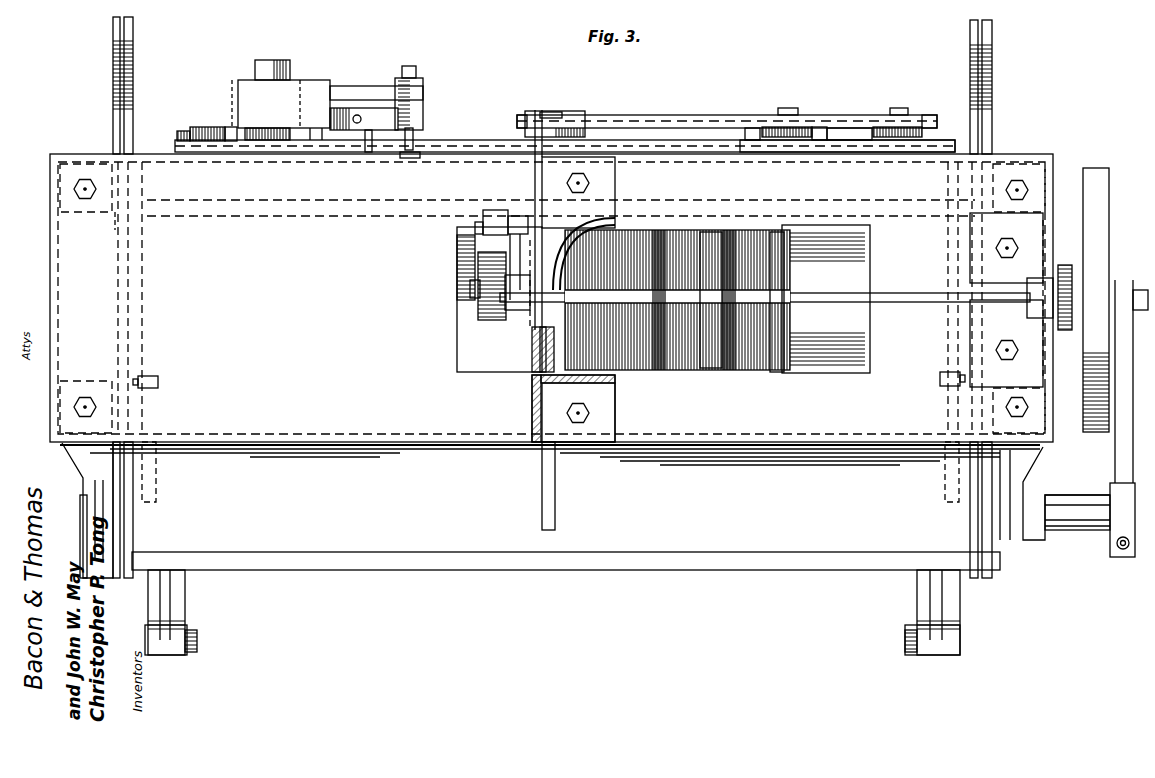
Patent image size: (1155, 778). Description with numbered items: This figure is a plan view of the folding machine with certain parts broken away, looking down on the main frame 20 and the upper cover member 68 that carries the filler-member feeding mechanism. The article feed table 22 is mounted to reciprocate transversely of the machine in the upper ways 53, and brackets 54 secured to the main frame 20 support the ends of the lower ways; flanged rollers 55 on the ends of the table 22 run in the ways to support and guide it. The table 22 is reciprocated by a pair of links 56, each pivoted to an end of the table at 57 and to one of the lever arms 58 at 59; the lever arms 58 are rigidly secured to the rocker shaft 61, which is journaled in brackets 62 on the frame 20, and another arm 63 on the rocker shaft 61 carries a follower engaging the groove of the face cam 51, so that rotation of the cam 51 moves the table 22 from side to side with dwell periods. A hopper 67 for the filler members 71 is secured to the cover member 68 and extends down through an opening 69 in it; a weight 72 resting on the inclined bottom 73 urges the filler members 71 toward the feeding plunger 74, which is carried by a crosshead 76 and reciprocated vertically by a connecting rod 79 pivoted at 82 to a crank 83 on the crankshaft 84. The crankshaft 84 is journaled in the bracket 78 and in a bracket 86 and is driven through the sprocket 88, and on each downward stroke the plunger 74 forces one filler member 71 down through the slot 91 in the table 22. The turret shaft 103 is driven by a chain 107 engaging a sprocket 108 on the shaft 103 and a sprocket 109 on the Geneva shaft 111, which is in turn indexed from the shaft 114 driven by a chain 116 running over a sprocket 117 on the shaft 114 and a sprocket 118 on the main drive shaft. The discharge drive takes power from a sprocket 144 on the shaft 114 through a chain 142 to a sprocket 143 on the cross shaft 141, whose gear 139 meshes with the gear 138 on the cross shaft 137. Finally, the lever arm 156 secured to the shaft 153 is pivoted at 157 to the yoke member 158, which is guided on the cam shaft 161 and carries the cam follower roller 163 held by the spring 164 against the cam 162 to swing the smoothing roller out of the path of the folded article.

The main frame 20 is at (52, 186).
The article feed table 22 is at (728, 560).
The face cam 51 is at (1096, 168).
The upper ways 53 is at (113, 72).
The brackets 54 is at (113, 108).
The flanged rollers 55 is at (120, 228).
The links 56 is at (170, 587).
The pivot 57 is at (160, 382).
The lever arms 58 is at (185, 600).
The pivot 59 is at (198, 640).
The rocker shaft 61 is at (1068, 530).
The brackets 62 is at (78, 465).
The arm 63 is at (1115, 455).
The hopper 67 is at (752, 373).
The upper cover member 68 is at (551, 298).
The opening 69 is at (456, 347).
The filler members 71 is at (650, 238).
The weight 72 is at (718, 372).
The inclined bottom 73 is at (786, 340).
The feeding plunger 74 is at (532, 342).
The crosshead 76 is at (535, 352).
The bracket 78 is at (542, 182).
The connecting rod 79 is at (457, 252).
The pivot 82 is at (478, 222).
The crank 83 is at (470, 270).
The crankshaft 84 is at (920, 292).
The bracket 86 is at (1046, 228).
The sprocket 88 is at (1064, 264).
The slot 91 is at (556, 497).
The turret shaft 103 is at (560, 112).
The chain 107 is at (668, 114).
The sprocket 108 is at (542, 112).
The sprocket 109 is at (810, 110).
The Geneva shaft 111 is at (795, 108).
The shaft 114 is at (895, 108).
The chain 116 is at (855, 114).
The sprocket 117 is at (925, 115).
The sprocket 118 is at (518, 116).
The cross shaft 137 is at (200, 125).
The gear 138 is at (177, 134).
The gear 139 is at (238, 118).
The cross shaft 141 is at (208, 127).
The chain 142 is at (728, 138).
The sprocket 143 is at (175, 145).
The sprocket 144 is at (945, 140).
The shaft 153 is at (368, 152).
The lever arm 156 is at (420, 122).
The pivot 157 is at (416, 74).
The yoke member 158 is at (362, 86).
The cam shaft 161 is at (278, 60).
The cam 162 is at (240, 118).
The cam follower roller 163 is at (322, 152).
The spring 164 is at (410, 158).